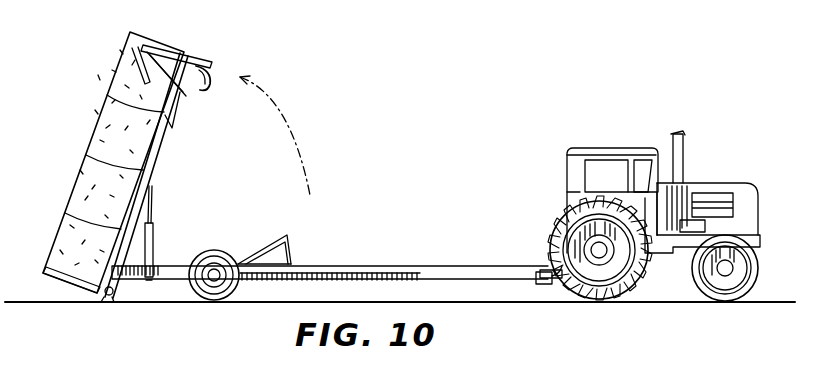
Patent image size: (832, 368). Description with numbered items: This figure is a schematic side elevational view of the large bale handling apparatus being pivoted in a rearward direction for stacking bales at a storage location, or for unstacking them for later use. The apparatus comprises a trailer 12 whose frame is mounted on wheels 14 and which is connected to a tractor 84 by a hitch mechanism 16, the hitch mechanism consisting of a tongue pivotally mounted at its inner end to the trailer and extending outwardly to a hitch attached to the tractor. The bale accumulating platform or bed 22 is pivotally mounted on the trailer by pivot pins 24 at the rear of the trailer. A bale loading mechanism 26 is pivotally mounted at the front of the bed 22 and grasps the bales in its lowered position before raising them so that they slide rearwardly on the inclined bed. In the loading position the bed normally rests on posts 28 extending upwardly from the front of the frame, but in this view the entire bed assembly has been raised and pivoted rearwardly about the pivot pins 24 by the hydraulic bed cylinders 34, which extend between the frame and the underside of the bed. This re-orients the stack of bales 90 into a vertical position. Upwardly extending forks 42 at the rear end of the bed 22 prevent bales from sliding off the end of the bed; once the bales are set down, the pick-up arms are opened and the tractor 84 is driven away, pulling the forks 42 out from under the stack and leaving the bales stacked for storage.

The trailer 12 is at (214, 273).
The wheels 14 is at (194, 285).
The hitch mechanism 16 is at (452, 253).
The bale accumulating platform or bed 22 is at (166, 158).
The pivot pins 24 is at (116, 296).
The bale loading mechanism 26 is at (196, 107).
The posts 28 is at (295, 238).
The hydraulic bed cylinders 34 is at (154, 236).
The forks 42 is at (68, 296).
The tractor 84 is at (755, 195).
The bale stack 90 is at (112, 138).